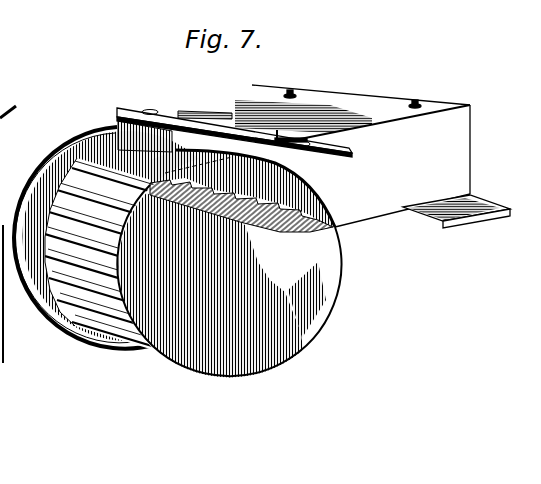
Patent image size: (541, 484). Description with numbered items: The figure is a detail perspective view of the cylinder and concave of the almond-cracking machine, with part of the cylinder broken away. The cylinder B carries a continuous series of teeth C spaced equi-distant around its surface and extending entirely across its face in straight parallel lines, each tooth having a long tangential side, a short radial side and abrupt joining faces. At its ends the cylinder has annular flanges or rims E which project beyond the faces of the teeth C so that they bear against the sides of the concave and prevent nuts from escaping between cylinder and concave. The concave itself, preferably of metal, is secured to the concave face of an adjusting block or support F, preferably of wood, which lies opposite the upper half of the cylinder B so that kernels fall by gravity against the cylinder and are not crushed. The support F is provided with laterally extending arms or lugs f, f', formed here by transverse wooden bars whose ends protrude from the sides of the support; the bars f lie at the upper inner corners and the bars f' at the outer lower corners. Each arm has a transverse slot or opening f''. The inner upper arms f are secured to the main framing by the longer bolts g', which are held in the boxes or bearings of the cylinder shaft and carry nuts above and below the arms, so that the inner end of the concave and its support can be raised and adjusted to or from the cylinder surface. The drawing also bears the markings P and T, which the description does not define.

The cylinder B is at (108, 342).
The teeth C is at (132, 262).
The annular flanges or rims E is at (286, 260).
The adjusting block or support F is at (412, 186).
The arms or lugs f is at (234, 112).
The arms or lugs f' is at (459, 200).
The transverse slot or opening f'' is at (299, 170).
The bolts g' is at (246, 114).
The pin P is at (8, 114).
The rod T is at (0, 197).